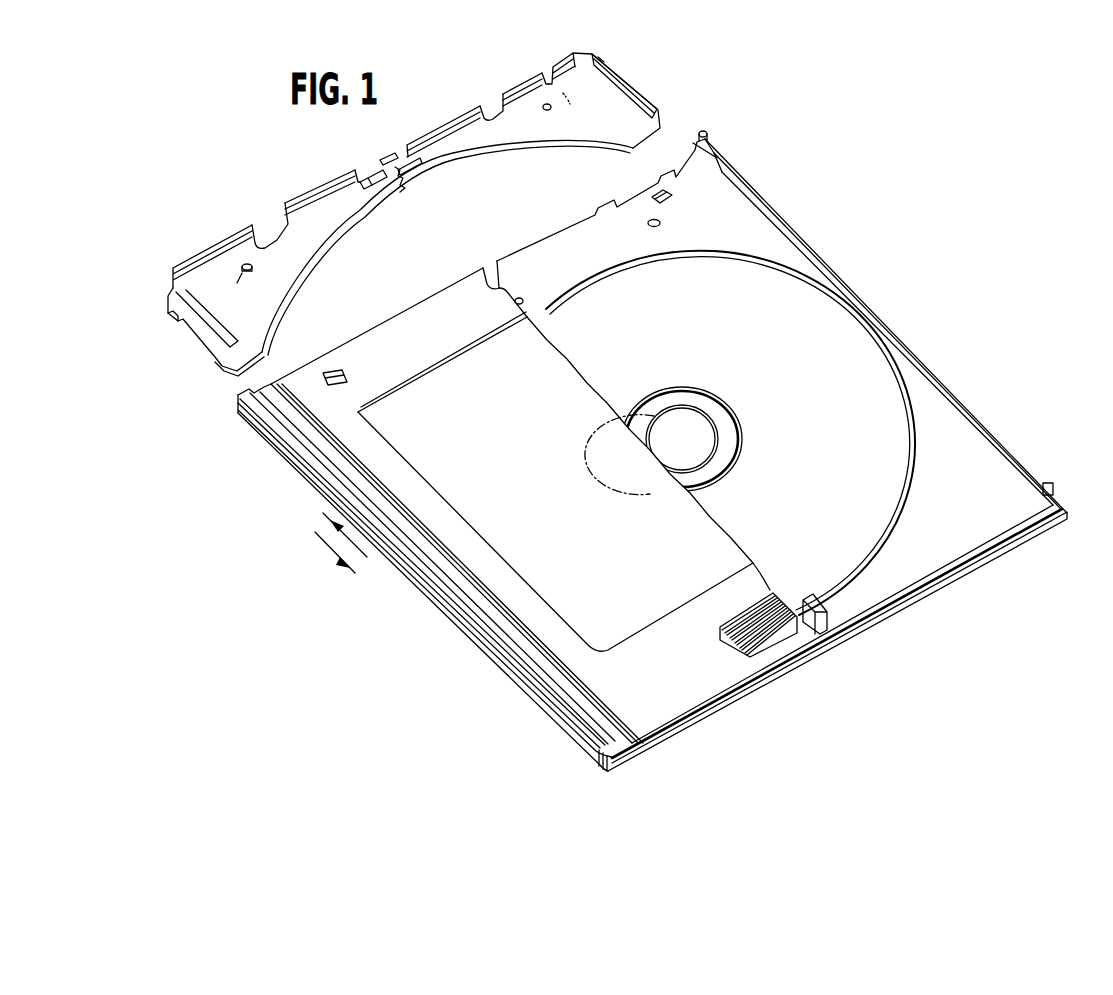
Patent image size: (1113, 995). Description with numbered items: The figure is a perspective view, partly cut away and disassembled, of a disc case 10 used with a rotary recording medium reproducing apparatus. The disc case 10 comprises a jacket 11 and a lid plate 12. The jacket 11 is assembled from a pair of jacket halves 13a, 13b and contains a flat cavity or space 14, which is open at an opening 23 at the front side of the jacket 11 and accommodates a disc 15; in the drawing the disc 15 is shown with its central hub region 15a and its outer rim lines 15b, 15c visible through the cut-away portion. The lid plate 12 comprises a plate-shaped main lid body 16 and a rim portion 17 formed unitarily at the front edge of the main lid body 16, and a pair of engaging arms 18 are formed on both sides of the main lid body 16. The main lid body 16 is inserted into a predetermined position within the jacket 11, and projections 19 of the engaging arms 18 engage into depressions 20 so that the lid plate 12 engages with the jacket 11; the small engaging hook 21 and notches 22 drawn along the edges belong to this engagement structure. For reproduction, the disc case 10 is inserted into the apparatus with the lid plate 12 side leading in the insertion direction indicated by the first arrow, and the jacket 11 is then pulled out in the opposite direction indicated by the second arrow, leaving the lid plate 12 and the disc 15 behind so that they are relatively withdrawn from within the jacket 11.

The disc case 10 is at (758, 156).
The jacket 11 is at (445, 620).
The lid plate 12 is at (303, 190).
The jacket half 13a is at (770, 667).
The jacket half 13b is at (963, 572).
The flat cavity or space 14 is at (968, 433).
The disc 15 is at (748, 433).
The center hub of disc 15a is at (665, 407).
The outer rim of disc 15b is at (911, 445).
The inner rim line of disc 15c is at (895, 473).
The main lid body 16 is at (485, 142).
The rim portion 17 is at (431, 130).
The engaging arm 18 is at (640, 84).
The projection 19 is at (605, 55).
The depression 20 is at (708, 158).
The hook portion 21 is at (508, 283).
The notch 22 is at (267, 233).
The opening 23 is at (489, 268).